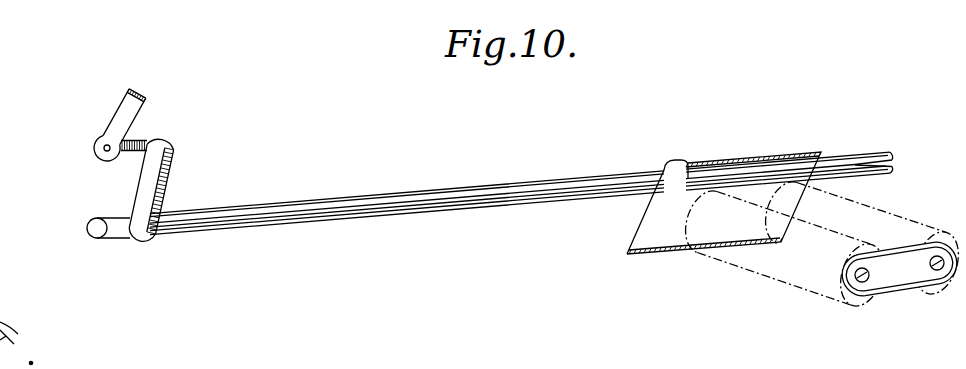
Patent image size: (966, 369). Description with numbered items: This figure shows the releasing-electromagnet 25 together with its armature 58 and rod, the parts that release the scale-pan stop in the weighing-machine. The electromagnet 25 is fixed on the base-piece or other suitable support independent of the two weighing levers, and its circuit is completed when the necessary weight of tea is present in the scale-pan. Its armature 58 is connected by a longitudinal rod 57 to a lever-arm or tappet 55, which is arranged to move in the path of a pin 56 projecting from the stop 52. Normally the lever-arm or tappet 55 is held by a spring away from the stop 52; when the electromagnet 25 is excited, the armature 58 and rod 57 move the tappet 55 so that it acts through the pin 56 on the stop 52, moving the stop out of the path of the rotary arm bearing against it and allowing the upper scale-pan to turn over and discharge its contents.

The stop 52 is at (127, 101).
The lever-arm or tappet 55 is at (148, 184).
The pin 56 is at (138, 140).
The longitudinal rod 57 is at (475, 188).
The armature 58 is at (637, 228).
The releasing-electromagnet 25 is at (826, 247).